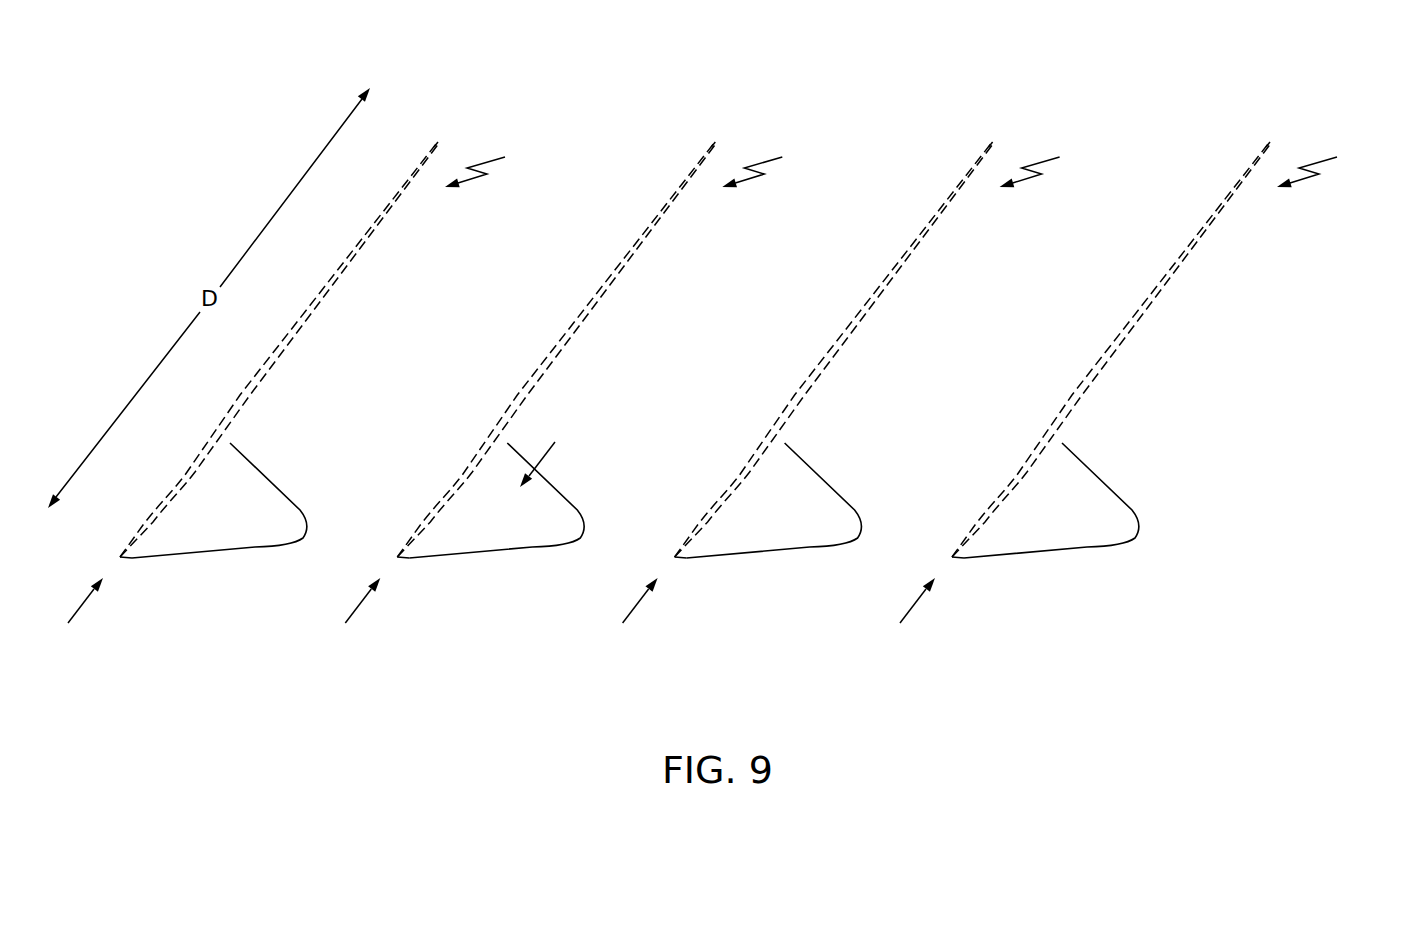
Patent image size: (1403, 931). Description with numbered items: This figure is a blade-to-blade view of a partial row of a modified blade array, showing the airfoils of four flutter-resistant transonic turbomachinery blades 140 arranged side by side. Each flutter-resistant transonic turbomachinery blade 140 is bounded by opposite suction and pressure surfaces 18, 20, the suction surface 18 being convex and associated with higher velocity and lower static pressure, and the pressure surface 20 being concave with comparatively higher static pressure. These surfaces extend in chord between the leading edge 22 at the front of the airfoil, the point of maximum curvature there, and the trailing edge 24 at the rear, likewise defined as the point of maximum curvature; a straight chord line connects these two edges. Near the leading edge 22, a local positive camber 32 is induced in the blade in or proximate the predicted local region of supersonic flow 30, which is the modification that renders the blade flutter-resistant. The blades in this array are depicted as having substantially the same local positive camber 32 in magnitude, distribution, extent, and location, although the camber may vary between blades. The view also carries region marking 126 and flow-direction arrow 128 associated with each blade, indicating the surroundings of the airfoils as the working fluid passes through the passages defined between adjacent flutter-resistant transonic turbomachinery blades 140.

The suction surface 18 is at (298, 330).
The pressure surface 20 is at (238, 395).
The leading edge 22 is at (118, 558).
The trailing edge 24 is at (437, 143).
The predicted local region of supersonic flow 30 is at (286, 532).
The local positive camber 32 is at (178, 497).
The region 126 is at (353, 441).
The flow direction 128 is at (83, 605).
The flutter-resistant transonic turbomachinery blade 140 is at (913, 165).